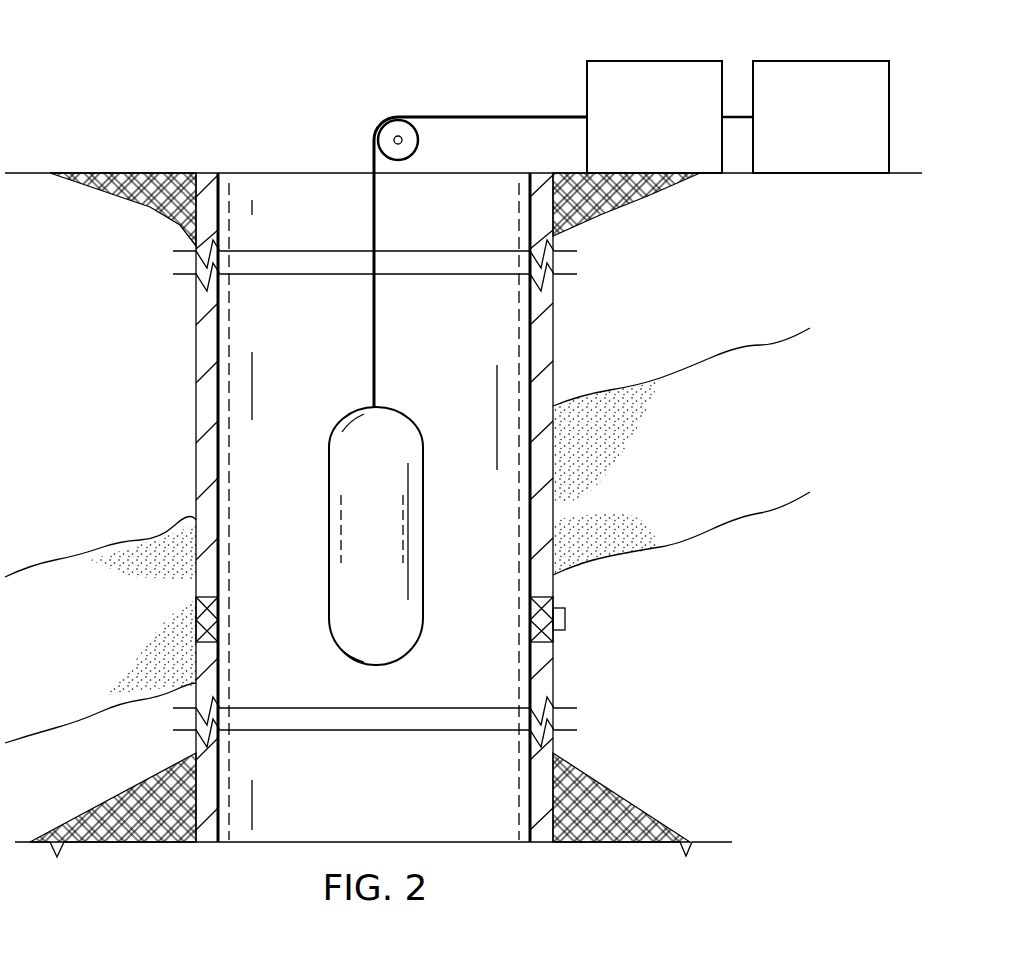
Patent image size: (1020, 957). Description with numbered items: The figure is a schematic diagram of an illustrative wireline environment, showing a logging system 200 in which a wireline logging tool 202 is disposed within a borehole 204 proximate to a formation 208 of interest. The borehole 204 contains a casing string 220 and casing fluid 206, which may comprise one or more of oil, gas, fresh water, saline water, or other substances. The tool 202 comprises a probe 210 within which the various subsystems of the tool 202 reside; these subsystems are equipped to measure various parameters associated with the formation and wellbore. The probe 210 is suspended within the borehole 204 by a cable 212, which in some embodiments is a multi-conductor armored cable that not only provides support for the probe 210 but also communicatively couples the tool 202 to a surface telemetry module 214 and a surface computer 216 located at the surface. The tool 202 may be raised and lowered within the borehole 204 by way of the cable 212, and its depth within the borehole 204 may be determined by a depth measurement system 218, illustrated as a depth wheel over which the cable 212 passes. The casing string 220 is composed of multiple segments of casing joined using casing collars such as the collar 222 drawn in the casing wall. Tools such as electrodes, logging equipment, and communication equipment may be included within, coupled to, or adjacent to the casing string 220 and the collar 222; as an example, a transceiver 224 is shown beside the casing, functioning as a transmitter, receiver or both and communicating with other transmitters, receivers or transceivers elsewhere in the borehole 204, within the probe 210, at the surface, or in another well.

The logging system 200 is at (125, 70).
The wireline logging tool 202 is at (445, 380).
The borehole 204 is at (292, 148).
The casing fluid 206 is at (460, 556).
The formation 208 is at (655, 466).
The probe 210 is at (352, 414).
The cable 212 is at (373, 218).
The surface telemetry module 214 is at (655, 60).
The surface computer 216 is at (822, 60).
The depth measurement system 218 is at (420, 142).
The casing string 220 is at (205, 352).
The collar 222 is at (212, 622).
The transceiver 224 is at (566, 621).